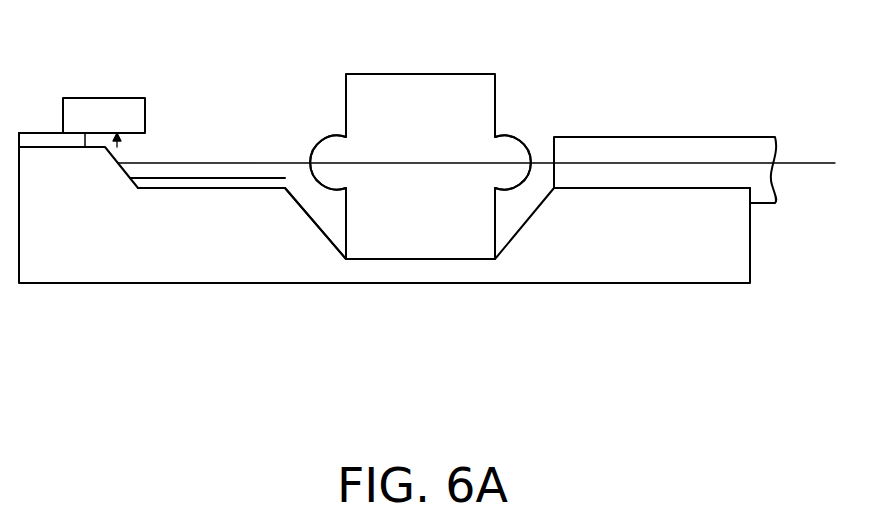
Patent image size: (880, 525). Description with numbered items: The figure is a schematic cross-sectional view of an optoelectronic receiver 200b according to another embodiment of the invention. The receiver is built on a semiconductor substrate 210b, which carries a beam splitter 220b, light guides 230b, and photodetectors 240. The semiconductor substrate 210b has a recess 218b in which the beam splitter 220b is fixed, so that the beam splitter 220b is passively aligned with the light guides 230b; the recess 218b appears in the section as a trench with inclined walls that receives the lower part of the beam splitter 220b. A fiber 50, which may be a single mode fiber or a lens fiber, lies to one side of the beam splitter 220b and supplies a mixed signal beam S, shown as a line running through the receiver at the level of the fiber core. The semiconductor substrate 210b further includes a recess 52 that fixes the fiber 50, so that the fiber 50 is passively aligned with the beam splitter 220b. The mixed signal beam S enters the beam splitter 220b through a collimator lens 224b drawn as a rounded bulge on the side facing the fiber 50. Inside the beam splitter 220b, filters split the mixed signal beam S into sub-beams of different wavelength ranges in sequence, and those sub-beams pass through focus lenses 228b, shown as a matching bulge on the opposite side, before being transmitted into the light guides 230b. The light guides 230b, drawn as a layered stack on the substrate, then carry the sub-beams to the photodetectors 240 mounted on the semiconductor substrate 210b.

The optoelectronic receiver 200b is at (435, 203).
The semiconductor substrate 210b is at (258, 268).
The recess 218b is at (321, 221).
The beam splitter 220b is at (453, 223).
The collimator lens 224b is at (500, 155).
The focus lenses 228b is at (335, 157).
The light guides 230b is at (167, 170).
The photodetectors 240 is at (103, 112).
The fiber 50 is at (648, 152).
The recess 52 is at (751, 199).
The mixed signal beam S is at (537, 163).